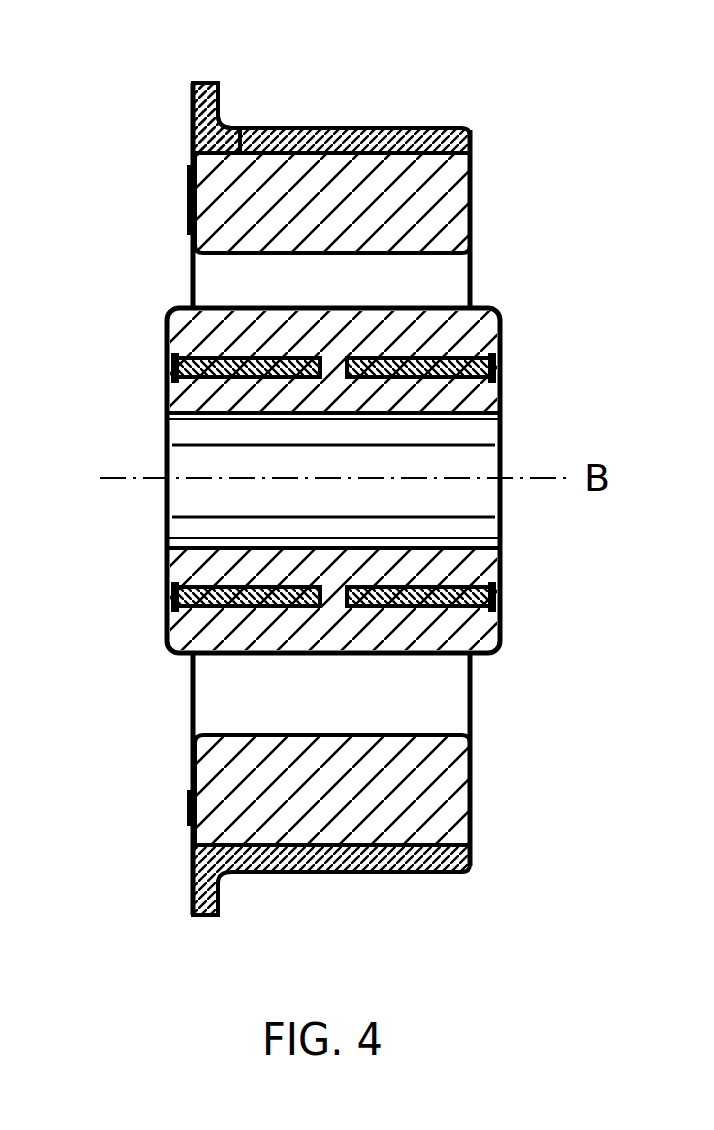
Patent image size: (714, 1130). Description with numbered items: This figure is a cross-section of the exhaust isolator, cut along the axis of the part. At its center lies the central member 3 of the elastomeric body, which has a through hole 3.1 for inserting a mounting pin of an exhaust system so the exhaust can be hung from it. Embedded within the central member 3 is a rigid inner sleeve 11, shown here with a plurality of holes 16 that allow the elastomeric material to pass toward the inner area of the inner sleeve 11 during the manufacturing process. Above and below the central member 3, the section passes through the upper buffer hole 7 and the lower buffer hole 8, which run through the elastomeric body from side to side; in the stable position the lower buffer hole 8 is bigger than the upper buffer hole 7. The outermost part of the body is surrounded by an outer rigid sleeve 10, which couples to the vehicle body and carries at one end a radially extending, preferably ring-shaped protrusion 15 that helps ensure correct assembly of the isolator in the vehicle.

The central member 3 is at (198, 333).
The through hole 3.1 is at (198, 465).
The upper buffer hole 7 is at (339, 297).
The lower buffer hole 8 is at (334, 710).
The outer rigid sleeve 10 is at (457, 130).
The inner sleeve 11 is at (487, 350).
The radially extending protrusion 15 is at (205, 107).
The holes 16 is at (330, 592).